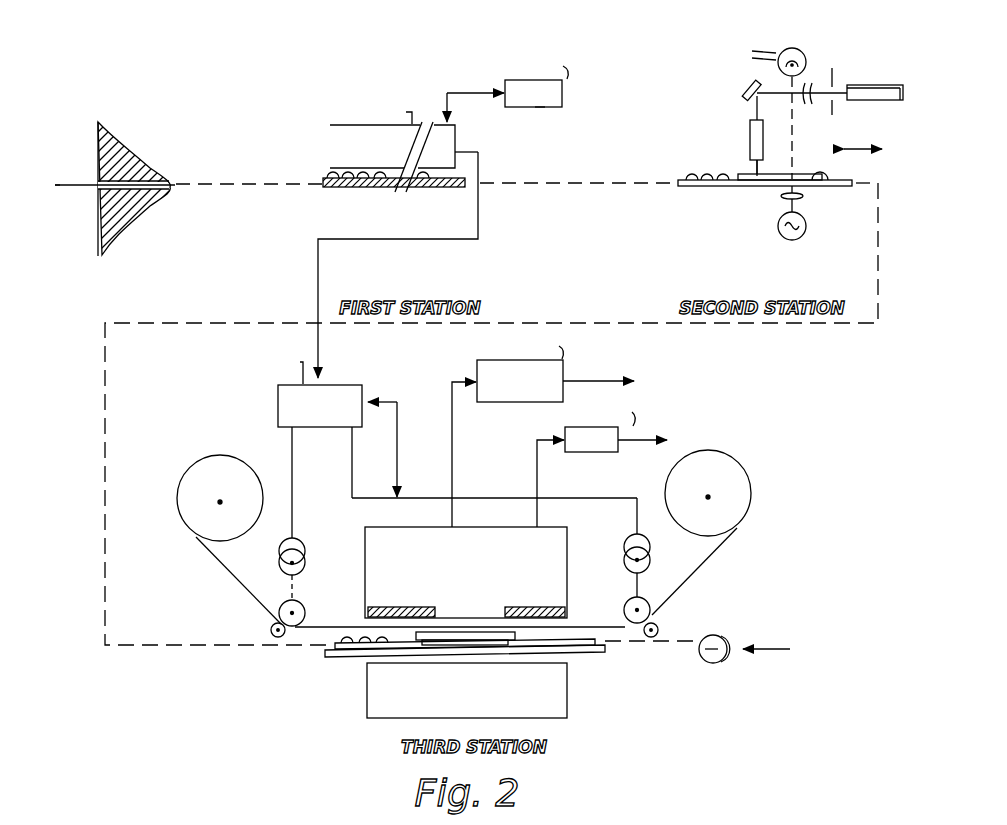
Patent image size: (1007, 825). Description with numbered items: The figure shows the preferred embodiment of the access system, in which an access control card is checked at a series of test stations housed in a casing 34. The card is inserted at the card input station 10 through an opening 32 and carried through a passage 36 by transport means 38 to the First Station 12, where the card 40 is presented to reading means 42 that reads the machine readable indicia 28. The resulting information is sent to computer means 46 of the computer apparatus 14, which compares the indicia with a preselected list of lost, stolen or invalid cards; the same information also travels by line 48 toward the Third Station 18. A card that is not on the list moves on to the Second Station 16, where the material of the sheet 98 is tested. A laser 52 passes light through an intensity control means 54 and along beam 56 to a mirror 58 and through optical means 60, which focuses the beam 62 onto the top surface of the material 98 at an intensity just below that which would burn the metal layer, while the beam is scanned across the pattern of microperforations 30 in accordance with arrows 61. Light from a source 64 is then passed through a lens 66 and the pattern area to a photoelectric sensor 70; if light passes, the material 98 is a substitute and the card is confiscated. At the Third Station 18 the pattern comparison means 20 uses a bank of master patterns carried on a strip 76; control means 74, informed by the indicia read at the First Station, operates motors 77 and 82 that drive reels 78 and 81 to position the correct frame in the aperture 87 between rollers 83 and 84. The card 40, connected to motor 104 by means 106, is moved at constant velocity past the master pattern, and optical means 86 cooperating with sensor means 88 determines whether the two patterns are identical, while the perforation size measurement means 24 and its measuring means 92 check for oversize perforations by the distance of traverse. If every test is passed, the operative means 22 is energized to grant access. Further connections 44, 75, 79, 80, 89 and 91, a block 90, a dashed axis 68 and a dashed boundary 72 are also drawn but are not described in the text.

The card input station 10 is at (128, 127).
The First Station 12 is at (488, 150).
The computer apparatus 14 is at (571, 88).
The Second Station 16 is at (731, 128).
The Third Station 18 is at (230, 418).
The pattern comparison means 20 is at (329, 671).
The operative means 22 is at (507, 411).
The perforation size measurement means 24 is at (590, 463).
The machine readable indicia 28 is at (324, 172).
The pattern of microperforations 30 is at (445, 632).
The opening 32 is at (102, 187).
The casing 34 is at (97, 160).
The passage 36 is at (150, 181).
The transport means 38 is at (235, 190).
The card 40 is at (346, 189).
The reading means 42 is at (369, 157).
The reader output to computer 44 is at (447, 102).
The computer means 46 is at (545, 108).
The line 48 is at (478, 214).
The laser 52 is at (870, 101).
The intensity control means 54 is at (834, 73).
The beam 56 is at (776, 92).
The mirror 58 is at (746, 88).
The optical means 60 is at (750, 139).
The arrows 61 is at (864, 151).
The focused beam 62 is at (750, 172).
The light source 64 is at (778, 230).
The lens 66 is at (781, 198).
The optical axis 68 is at (796, 142).
The photoelectric sensor 70 is at (800, 51).
The enclosure boundary 72 is at (878, 269).
The control means 74 is at (278, 396).
The control line 75 is at (397, 402).
The strip of material 76 is at (238, 579).
The motor 77 is at (304, 548).
The reel 78 is at (189, 519).
The roller drive line 79 is at (292, 453).
The right roller drive line 80 is at (618, 497).
The reel 81 is at (742, 490).
The motor 82 is at (650, 548).
The roller 83 is at (305, 611).
The roller 84 is at (648, 600).
The optical means 86 is at (567, 692).
The aperture 87 is at (435, 607).
The sensor means 88 is at (567, 547).
The line to access operator 89 is at (452, 429).
The access operator 90 is at (563, 366).
The line to size sensor 91 is at (537, 488).
The measuring means 92 is at (618, 452).
The sheet material 98 is at (822, 187).
The motor 104 is at (726, 637).
The connecting means 106 is at (606, 650).